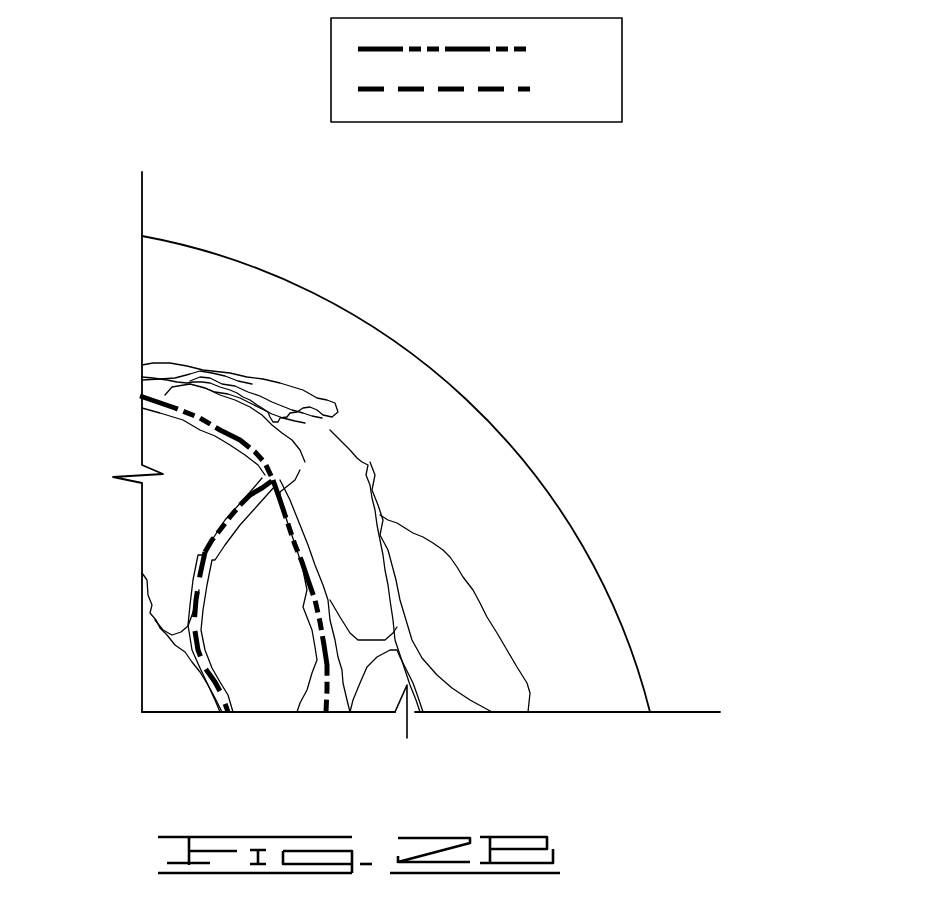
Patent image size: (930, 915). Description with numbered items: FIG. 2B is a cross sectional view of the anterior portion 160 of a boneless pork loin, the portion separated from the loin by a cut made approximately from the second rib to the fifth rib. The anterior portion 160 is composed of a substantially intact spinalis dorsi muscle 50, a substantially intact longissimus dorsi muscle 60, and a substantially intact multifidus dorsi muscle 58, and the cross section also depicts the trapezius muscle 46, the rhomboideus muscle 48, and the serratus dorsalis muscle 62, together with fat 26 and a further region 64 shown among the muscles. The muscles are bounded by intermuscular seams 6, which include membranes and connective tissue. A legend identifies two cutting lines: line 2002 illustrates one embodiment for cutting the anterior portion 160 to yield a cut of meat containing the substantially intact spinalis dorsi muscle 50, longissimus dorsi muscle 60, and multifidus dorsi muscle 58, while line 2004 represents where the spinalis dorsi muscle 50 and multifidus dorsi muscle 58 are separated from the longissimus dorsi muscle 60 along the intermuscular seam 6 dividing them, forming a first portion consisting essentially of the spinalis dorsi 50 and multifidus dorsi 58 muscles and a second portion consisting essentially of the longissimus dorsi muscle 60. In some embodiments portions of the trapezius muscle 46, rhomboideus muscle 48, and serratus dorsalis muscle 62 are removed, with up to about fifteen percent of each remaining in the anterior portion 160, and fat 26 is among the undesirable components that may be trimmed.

The line 2002 is at (476, 50).
The line 2004 is at (476, 90).
The anterior portion 160 is at (500, 360).
The trapezius muscle 46 is at (215, 368).
The intermuscular seam 6 is at (183, 424).
The spinalis dorsi muscle 50 is at (220, 507).
The rhomboideus muscle 48 is at (348, 516).
The fat 26 is at (480, 493).
The longissimus dorsi muscle 60 is at (282, 634).
The sixth region 64 is at (479, 634).
The multifidus dorsi muscle 58 is at (192, 701).
The serratus dorsalis muscle 62 is at (343, 680).